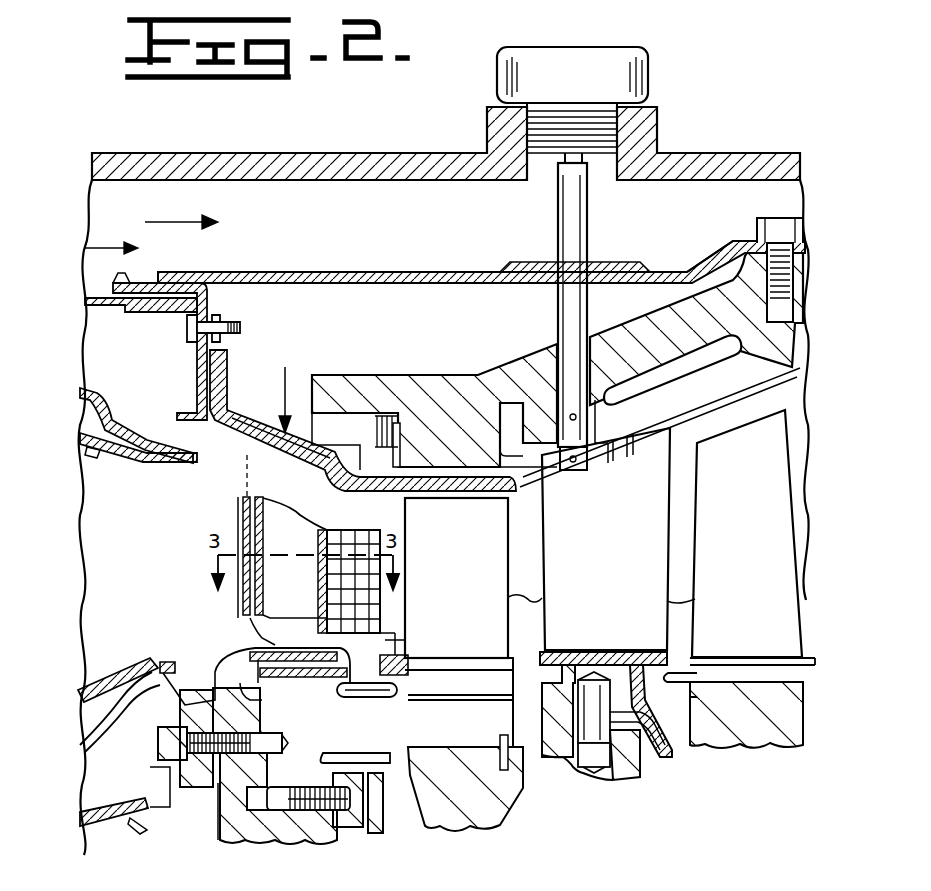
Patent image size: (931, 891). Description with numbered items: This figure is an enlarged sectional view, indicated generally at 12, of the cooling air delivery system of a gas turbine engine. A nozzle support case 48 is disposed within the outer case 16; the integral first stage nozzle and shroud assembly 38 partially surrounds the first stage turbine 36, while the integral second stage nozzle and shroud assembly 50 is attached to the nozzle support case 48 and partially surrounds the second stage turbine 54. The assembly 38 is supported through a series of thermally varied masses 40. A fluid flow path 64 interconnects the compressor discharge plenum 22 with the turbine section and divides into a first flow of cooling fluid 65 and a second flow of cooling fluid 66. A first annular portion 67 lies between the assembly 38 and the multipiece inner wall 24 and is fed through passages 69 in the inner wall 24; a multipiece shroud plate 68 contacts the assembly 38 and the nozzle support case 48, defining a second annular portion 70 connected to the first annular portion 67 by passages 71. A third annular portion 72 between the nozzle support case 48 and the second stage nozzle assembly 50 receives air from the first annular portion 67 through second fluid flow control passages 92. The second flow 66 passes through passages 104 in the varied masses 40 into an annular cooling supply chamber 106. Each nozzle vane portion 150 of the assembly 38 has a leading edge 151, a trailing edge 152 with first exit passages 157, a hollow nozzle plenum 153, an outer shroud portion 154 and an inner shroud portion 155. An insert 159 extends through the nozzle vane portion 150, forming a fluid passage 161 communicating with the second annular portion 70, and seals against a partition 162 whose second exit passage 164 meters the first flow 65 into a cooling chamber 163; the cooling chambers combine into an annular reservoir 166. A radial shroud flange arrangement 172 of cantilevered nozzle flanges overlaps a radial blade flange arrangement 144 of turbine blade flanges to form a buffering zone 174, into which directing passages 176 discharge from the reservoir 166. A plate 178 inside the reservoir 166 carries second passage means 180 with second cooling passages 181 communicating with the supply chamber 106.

The gas turbine engine combustor assembly 12 is at (168, 128).
The outer case 16 is at (282, 153).
The compressor discharge plenum 22 is at (366, 212).
The multipiece inner wall 24 is at (218, 272).
The first stage turbine 36 is at (475, 578).
The integral first stage nozzle and shroud assembly 38 is at (197, 437).
The thermally varied masses 40 is at (325, 775).
The nozzle support case 48 is at (463, 377).
The integral second stage nozzle and shroud assembly 50 is at (623, 579).
The second stage turbine 54 is at (756, 582).
The fluid flow path 64 is at (94, 244).
The first flow of cooling fluid 65 is at (333, 312).
The second flow of cooling fluid 66 is at (210, 810).
The first annular portion 67 is at (401, 333).
The multipiece shroud plate 68 is at (240, 427).
The passages 69 is at (393, 272).
The second annular portion 70 is at (361, 447).
The passages 71 is at (297, 374).
The third annular portion 72 is at (683, 422).
The second fluid flow control passages 92 is at (505, 375).
The passages 104 is at (237, 833).
The annular cooling supply chamber 106 is at (262, 690).
The radial blade flange arrangement 144 is at (410, 712).
The nozzle vane portion 150 is at (245, 592).
The leading edge 151 is at (243, 573).
The trailing edge 152 is at (400, 532).
The nozzle plenum 153 is at (360, 528).
The outer shroud portion 154 is at (243, 480).
The inner shroud portion 155 is at (242, 668).
The first exit passages 157 is at (393, 587).
The insert 159 is at (264, 592).
The fluid passage 161 is at (310, 541).
The partition 162 is at (190, 717).
The cooling chamber 163 is at (180, 777).
The second exit passage 164 is at (390, 640).
The annular reservoir 166 is at (272, 632).
The radial shroud flange arrangement 172 is at (397, 744).
The buffering passage or zone 174 is at (407, 653).
The directing passages 176 is at (380, 708).
The additional plate 178 is at (158, 748).
The second passage means 180 is at (262, 698).
The second cooling passages 181 is at (275, 686).